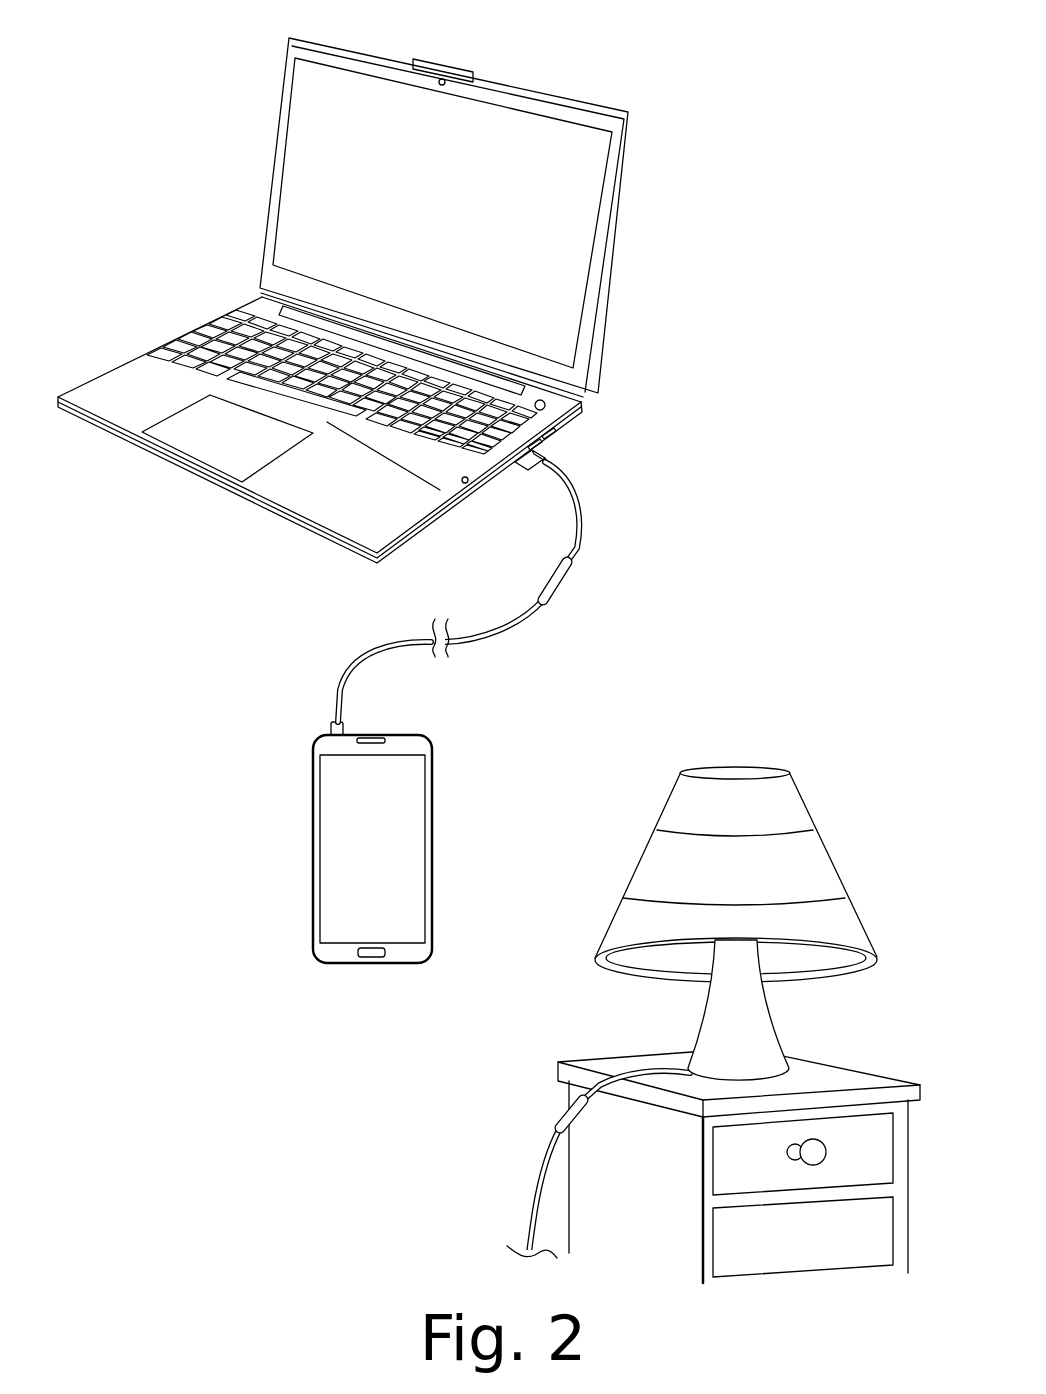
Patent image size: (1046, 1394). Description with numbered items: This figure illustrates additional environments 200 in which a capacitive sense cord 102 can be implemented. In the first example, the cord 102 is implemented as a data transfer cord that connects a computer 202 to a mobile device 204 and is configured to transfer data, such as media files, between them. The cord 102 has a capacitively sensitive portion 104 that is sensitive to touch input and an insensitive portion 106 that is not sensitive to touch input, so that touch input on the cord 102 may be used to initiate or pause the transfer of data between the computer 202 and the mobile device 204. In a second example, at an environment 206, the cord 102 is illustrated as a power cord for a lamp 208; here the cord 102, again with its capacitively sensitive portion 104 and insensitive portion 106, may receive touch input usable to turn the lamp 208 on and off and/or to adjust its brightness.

The additional environments 200 is at (482, 483).
The computer 202 is at (628, 120).
The mobile device 204 is at (428, 840).
The environment 206 is at (771, 896).
The lamp 208 is at (712, 768).
The capacitive sense cord 102 is at (488, 1233).
The capacitively sensitive portion 104 is at (547, 572).
The insensitive portion 106 is at (517, 615).